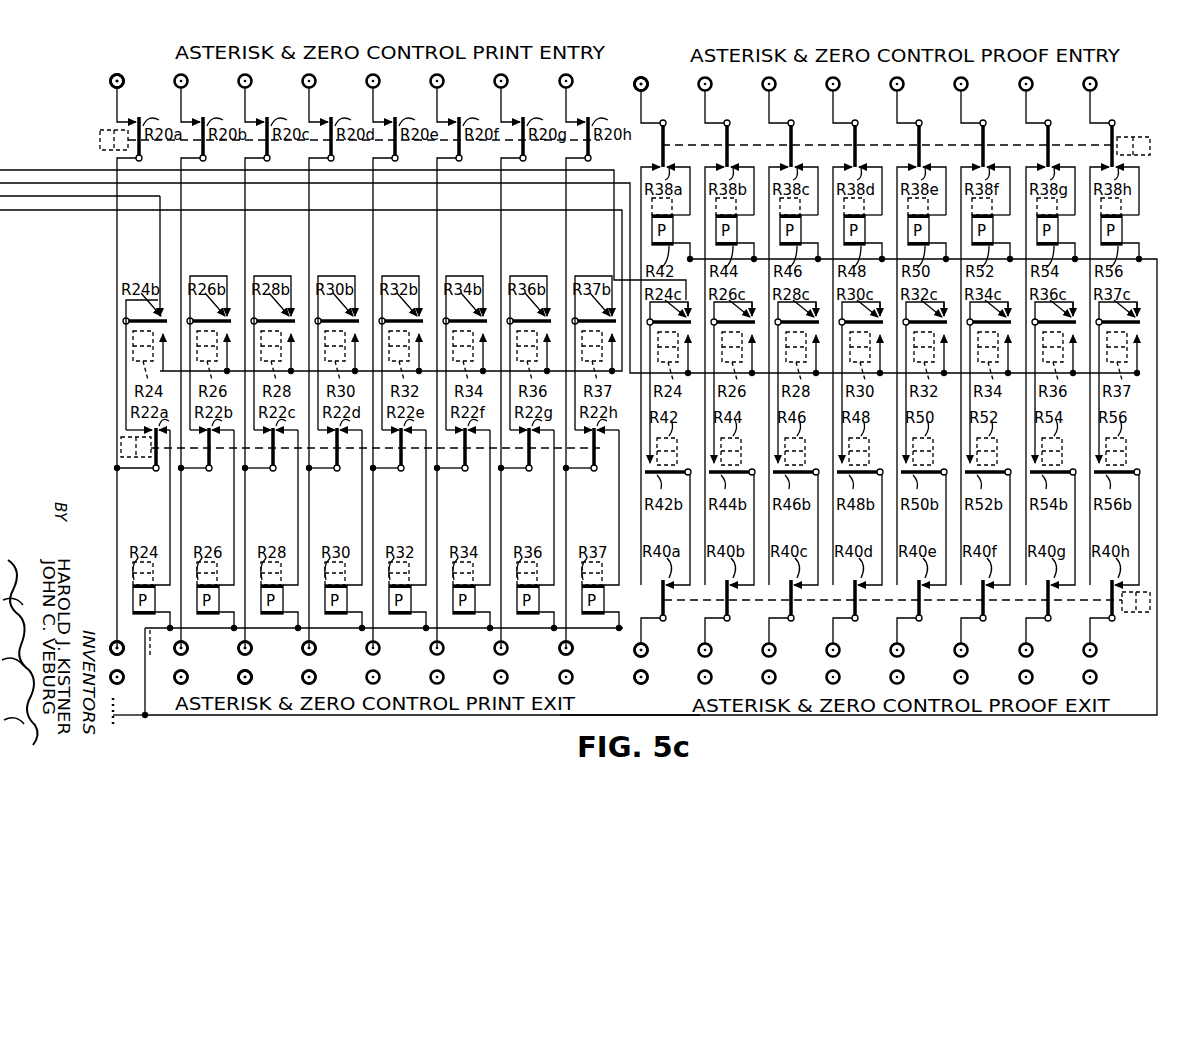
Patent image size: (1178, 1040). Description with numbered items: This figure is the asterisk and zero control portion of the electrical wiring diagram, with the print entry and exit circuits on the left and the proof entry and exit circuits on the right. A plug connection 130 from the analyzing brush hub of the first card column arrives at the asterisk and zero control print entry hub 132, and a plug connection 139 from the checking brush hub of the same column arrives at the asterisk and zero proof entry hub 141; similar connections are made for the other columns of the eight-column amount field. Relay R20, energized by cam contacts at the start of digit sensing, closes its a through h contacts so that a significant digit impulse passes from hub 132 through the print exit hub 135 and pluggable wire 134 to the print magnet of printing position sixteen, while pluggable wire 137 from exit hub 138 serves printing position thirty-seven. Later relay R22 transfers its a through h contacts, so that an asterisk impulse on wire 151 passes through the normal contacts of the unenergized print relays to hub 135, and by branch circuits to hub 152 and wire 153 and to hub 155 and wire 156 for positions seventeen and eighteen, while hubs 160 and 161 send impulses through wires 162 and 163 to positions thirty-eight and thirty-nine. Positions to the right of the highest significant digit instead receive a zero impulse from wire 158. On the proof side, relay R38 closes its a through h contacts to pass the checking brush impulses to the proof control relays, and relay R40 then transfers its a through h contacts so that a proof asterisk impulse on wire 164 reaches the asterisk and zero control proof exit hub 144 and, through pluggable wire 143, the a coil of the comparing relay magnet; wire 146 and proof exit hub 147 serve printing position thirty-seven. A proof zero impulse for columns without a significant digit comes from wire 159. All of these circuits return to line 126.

The line 126 is at (240, 716).
The plug connection 130 is at (118, 65).
The asterisk and zero control print entry hub 132 is at (118, 73).
The pluggable wire 134 is at (108, 632).
The asterisk and zero control print exit hub 135 is at (123, 642).
The pluggable wire 137 is at (130, 718).
The asterisk and zero control print exit hub 138 is at (141, 670).
The plug connection 139 is at (640, 78).
The asterisk and zero proof entry hub 141 is at (644, 78).
The pluggable wire 143 is at (632, 649).
The asterisk and zero control proof exit hub 144 is at (644, 652).
The wire 146 is at (663, 714).
The asterisk and zero control proof exit hub 147 is at (646, 677).
The wire 151 is at (3, 200).
The hub 152 is at (150, 632).
The wire 153 is at (160, 652).
The hub 155 is at (200, 661).
The wire 156 is at (213, 632).
The wire 158 is at (228, 211).
The wire 159 is at (34, 183).
The hub 160 is at (246, 679).
The hub 161 is at (311, 679).
The wire 162 is at (197, 677).
The wire 163 is at (288, 650).
The wire 164 is at (22, 171).
The relay R20 is at (100, 138).
The relay R22 is at (121, 448).
The relay R38 is at (1150, 130).
The relay R40 is at (1138, 612).